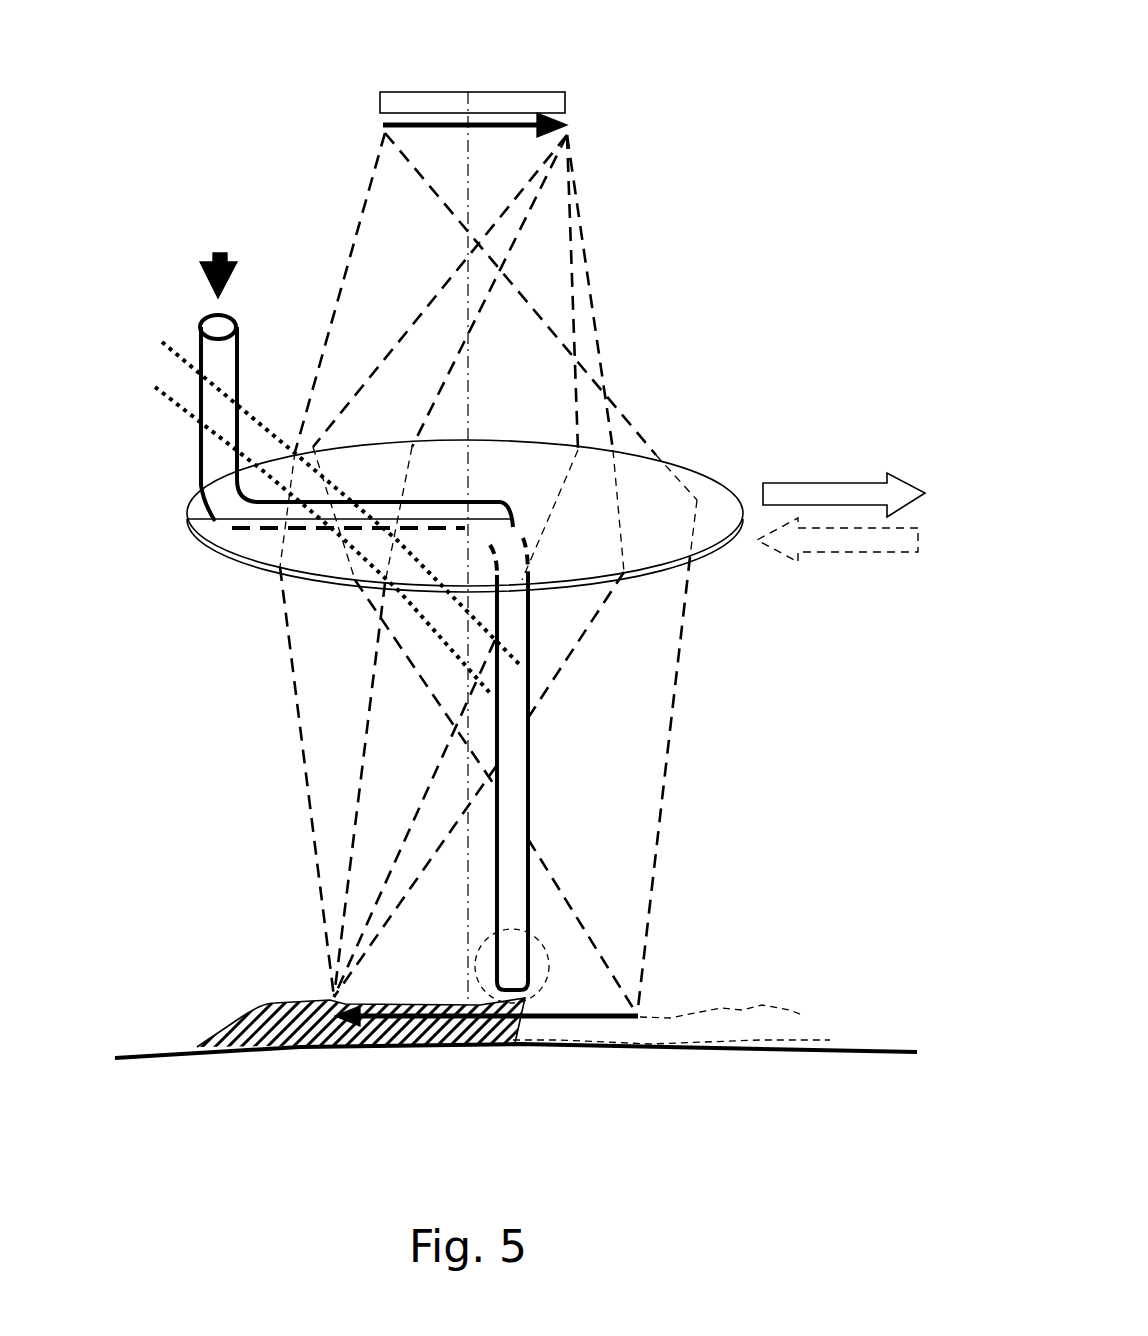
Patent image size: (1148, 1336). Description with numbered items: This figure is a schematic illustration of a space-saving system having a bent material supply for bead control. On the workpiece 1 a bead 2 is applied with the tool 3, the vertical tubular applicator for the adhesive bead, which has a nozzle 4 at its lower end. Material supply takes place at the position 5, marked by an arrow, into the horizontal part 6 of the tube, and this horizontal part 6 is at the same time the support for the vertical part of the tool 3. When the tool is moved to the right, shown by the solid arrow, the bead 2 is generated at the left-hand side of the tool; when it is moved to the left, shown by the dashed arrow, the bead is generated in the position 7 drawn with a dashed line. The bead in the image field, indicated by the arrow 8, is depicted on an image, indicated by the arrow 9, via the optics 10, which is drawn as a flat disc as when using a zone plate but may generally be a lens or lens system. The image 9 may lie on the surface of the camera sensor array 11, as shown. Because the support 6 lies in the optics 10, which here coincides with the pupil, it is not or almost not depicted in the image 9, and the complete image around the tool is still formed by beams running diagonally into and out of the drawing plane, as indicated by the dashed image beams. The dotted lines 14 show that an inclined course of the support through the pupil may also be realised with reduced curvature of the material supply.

The workpiece 1 is at (169, 1066).
The bead 2 is at (290, 1035).
The tool 3 is at (543, 757).
The nozzle 4 is at (554, 953).
The material supply position 5 is at (208, 310).
The horizontal part of the tube 6 is at (295, 540).
The bead position 7 is at (717, 1023).
The image field 8 is at (558, 1030).
The image 9 is at (412, 115).
The optics 10 is at (657, 583).
The camera sensor array 11 is at (507, 91).
The dotted lines 14 is at (170, 360).